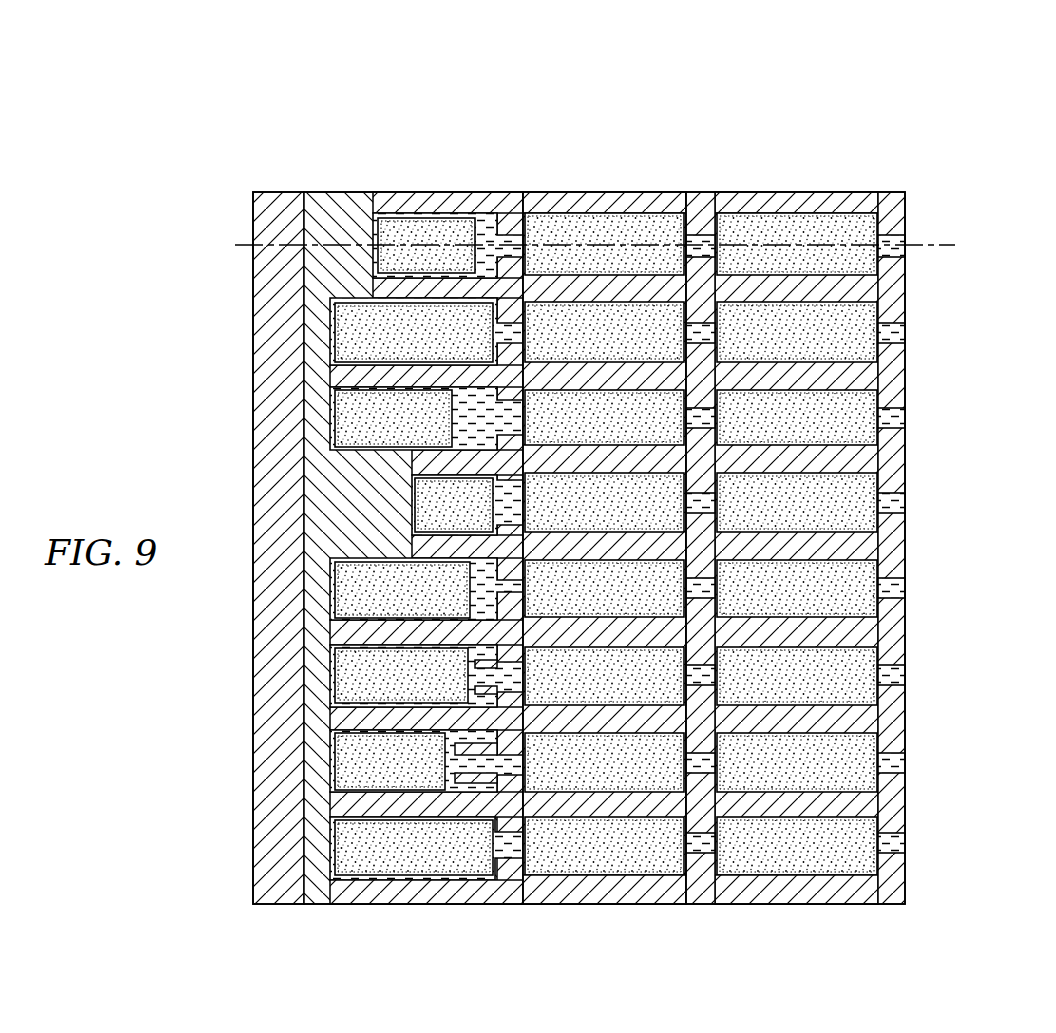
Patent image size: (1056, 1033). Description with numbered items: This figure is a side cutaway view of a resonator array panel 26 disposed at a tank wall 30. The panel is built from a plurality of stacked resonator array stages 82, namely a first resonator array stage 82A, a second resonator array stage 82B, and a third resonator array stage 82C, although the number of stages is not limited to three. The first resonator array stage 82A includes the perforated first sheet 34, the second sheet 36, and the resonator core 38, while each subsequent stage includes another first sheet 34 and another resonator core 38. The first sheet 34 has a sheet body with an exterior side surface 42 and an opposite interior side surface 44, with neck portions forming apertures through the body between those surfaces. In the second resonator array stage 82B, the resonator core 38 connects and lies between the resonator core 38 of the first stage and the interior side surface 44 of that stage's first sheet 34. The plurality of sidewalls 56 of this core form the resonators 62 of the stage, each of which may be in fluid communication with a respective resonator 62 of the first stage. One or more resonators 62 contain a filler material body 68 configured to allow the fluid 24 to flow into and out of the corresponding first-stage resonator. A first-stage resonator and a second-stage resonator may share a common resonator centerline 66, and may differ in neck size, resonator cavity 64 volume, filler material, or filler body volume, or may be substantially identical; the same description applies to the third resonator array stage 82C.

The fluid 24 is at (995, 495).
The resonator array panel 26 is at (948, 176).
The tank wall 30 is at (260, 305).
The first sheet 34 is at (703, 883).
The second sheet 36 is at (317, 892).
The resonator core 38 is at (405, 895).
The exterior side surface 42 is at (536, 202).
The interior side surface 44 is at (683, 202).
The sidewalls 56 is at (635, 202).
The resonator 62 is at (450, 210).
The resonator cavity 64 is at (416, 218).
The common resonator centerline 66 is at (943, 245).
The filler material body 68 is at (426, 343).
The resonator array stages 82 is at (603, 467).
The first resonator array stage 82A is at (523, 137).
The second resonator array stage 82B is at (700, 137).
The third resonator array stage 82C is at (703, 137).